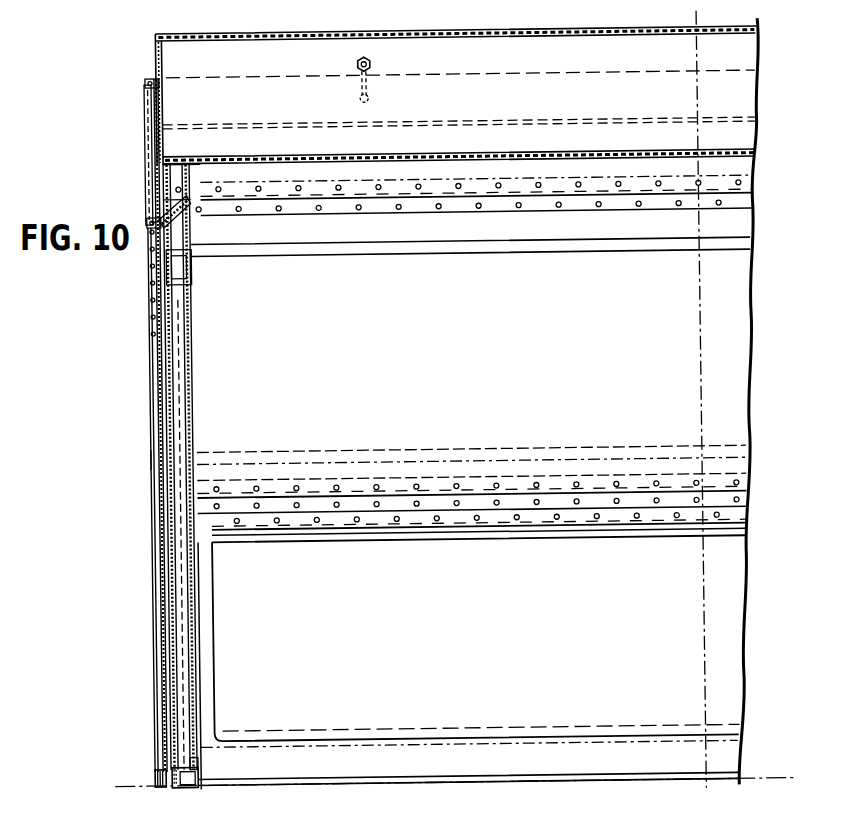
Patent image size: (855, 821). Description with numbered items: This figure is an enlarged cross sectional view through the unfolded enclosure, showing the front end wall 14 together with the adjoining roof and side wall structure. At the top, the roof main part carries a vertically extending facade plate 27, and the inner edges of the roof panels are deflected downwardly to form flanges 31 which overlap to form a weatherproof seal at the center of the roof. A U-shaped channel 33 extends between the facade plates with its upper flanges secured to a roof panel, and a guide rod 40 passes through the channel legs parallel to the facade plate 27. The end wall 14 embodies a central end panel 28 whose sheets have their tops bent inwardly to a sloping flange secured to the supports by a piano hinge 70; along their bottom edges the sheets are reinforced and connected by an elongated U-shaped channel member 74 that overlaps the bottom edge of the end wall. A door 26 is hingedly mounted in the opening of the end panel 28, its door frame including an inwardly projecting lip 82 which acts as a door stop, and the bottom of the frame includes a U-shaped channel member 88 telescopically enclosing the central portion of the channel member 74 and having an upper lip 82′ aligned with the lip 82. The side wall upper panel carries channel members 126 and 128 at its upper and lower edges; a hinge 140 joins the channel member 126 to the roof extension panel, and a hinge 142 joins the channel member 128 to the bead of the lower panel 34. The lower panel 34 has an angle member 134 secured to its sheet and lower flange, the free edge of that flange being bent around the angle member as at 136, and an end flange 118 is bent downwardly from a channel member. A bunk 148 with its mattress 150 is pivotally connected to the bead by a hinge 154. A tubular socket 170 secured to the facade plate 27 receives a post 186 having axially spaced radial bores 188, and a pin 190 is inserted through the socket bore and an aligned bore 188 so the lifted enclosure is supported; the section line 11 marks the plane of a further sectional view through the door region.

The flange 31 is at (514, 30).
The guide rod 40 is at (374, 62).
The facade plate 27 is at (158, 75).
The tubular socket 170 is at (146, 120).
The piano hinge 70 is at (179, 207).
The pin 190 is at (150, 222).
The U-shaped channel 33 is at (738, 139).
The hinge 140 is at (597, 182).
The channel member 126 is at (548, 238).
The lower panel 34 is at (767, 419).
The lip 82 is at (193, 428).
The radial bore 188 is at (153, 318).
The end wall 14 is at (141, 460).
The post 186 is at (152, 551).
The channel member 128 is at (485, 477).
The hinge 142 is at (568, 490).
The hinge 154 is at (450, 538).
The mattress 150 is at (543, 646).
The bunk 148 is at (724, 614).
The door 26 is at (172, 612).
The central end panel 28 is at (168, 726).
The angle member 134 is at (597, 760).
The upper lip 82′ is at (198, 770).
The U-shaped channel member 88 is at (201, 778).
The U-shaped channel member 74 is at (182, 792).
The bent edge 136 is at (455, 784).
The end flange 118 is at (634, 820).
The section line 11 is at (215, 400).